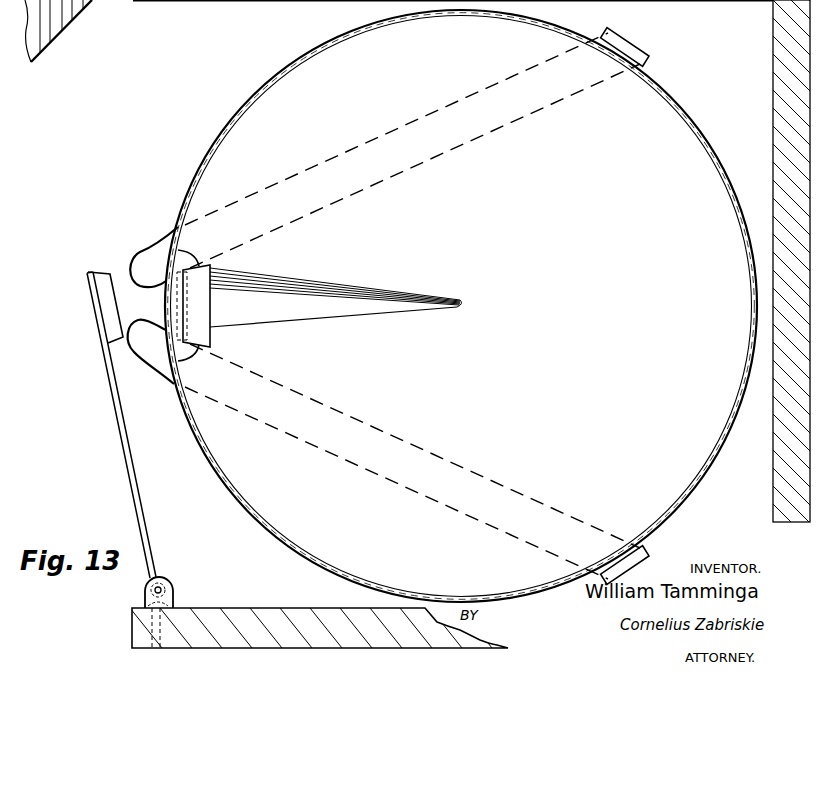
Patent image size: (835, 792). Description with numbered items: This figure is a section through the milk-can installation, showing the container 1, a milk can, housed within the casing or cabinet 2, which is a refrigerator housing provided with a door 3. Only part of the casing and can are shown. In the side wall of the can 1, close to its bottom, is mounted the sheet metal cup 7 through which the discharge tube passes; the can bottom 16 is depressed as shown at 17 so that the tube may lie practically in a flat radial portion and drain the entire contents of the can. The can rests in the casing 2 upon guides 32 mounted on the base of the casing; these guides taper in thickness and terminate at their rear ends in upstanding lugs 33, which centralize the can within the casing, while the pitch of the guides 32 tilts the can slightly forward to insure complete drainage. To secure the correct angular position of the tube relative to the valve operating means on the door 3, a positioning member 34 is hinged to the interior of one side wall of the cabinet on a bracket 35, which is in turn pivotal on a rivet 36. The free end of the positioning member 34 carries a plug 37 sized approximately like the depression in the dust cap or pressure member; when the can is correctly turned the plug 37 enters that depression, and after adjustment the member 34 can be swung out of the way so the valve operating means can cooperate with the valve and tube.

The container 1 is at (703, 483).
The casing or cabinet 2 is at (212, 1).
The door 3 is at (66, 30).
The sheet metal cup 7 is at (198, 310).
The can bottom 16 is at (583, 294).
The depression 17 is at (357, 283).
The guides 32 is at (528, 113).
The upstanding lugs 33 is at (632, 55).
The positioning member 34 is at (118, 420).
The bracket 35 is at (173, 590).
The rivet 36 is at (152, 622).
The plug 37 is at (110, 273).